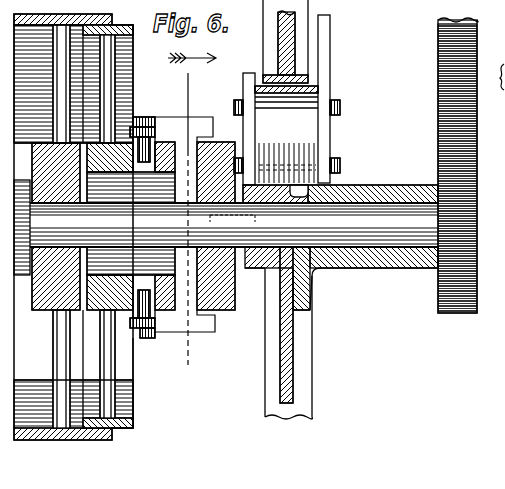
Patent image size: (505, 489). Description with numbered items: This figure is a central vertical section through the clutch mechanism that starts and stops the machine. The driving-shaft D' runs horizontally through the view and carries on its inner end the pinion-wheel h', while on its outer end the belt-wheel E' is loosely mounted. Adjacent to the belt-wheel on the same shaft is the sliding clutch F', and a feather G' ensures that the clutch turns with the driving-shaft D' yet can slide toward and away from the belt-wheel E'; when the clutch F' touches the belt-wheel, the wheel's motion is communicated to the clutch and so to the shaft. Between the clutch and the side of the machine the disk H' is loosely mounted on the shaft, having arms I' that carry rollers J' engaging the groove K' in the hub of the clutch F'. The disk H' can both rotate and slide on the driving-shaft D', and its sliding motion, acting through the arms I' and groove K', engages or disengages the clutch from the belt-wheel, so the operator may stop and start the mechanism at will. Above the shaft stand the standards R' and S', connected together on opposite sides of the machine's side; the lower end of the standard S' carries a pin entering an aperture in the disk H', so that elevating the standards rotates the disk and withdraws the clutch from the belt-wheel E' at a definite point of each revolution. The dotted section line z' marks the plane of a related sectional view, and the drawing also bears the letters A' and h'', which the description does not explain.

The belt-wheel E' is at (73, 240).
The sliding clutch F' is at (144, 378).
The feather G' is at (131, 223).
The disk H' is at (228, 226).
The arms I' is at (172, 227).
The rollers J' is at (172, 226).
The groove K' is at (83, 245).
The driving-shaft D' is at (234, 225).
The standard S' is at (242, 129).
The standard R' is at (303, 91).
The arm A' is at (298, 333).
The pinion-wheel h' is at (468, 165).
The gear teeth h'' is at (448, 168).
The section line Z' Z' z' is at (193, 229).